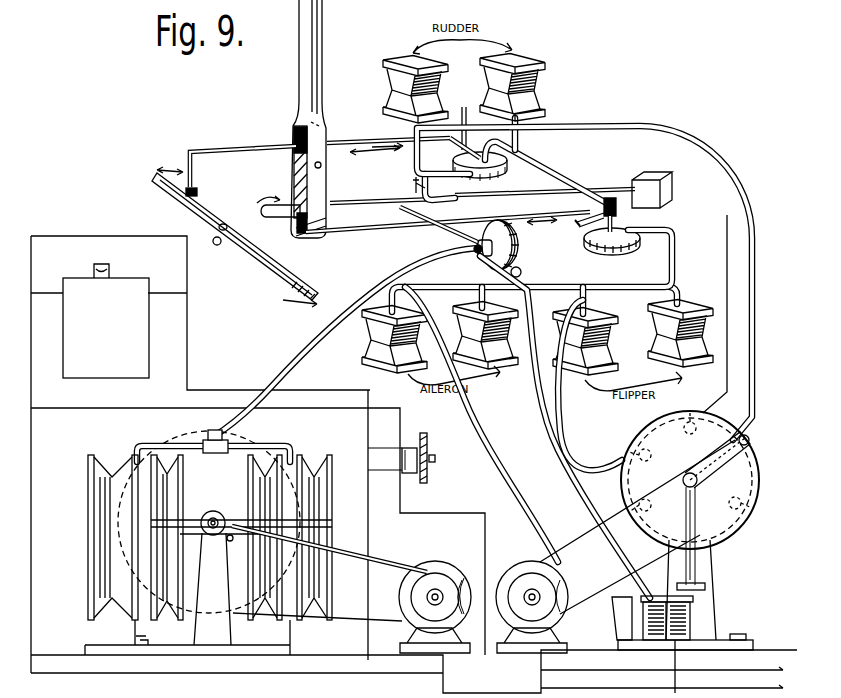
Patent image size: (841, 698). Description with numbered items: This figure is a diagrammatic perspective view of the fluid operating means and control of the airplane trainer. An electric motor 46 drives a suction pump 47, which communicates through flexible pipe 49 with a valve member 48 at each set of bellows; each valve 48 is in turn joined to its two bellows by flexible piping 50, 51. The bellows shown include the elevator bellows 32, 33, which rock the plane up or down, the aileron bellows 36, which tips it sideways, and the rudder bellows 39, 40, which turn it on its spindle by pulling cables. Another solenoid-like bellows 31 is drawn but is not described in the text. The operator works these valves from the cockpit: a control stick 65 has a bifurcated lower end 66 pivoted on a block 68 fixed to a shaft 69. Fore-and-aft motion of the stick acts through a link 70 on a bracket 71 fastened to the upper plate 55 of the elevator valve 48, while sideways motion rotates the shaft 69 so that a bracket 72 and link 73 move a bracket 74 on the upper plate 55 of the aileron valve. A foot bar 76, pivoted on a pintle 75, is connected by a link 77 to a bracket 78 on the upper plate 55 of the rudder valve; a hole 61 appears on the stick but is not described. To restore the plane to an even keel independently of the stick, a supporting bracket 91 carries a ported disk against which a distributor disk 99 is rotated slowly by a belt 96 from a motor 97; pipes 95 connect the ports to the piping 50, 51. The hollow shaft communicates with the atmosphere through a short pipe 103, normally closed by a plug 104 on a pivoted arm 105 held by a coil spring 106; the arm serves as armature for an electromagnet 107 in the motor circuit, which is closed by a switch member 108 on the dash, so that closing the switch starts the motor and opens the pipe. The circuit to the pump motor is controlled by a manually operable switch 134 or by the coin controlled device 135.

The aileron solenoid 31 is at (509, 352).
The elevator bellows 32 is at (580, 358).
The elevator bellows 33 is at (742, 332).
The aileron bellows 36 is at (362, 343).
The rudder bellows 39 is at (396, 98).
The rudder bellows 40 is at (540, 82).
The electric motor 46 is at (439, 578).
The suction pump 47 is at (188, 602).
The valve member 48 is at (505, 173).
The flexible pipe 49 is at (552, 173).
The flexible piping 50 is at (416, 127).
The flexible piping 51 is at (520, 127).
The upper plate 55 is at (457, 156).
The pivot hole 61 is at (321, 160).
The control stick 65 is at (321, 22).
The bifurcated lower end 66 is at (326, 192).
The block 68 is at (294, 172).
The shaft 69 is at (356, 204).
The link 70 is at (387, 233).
The bracket 71 is at (582, 226).
The bracket 72 is at (458, 193).
The link 73 is at (414, 185).
The bracket 74 is at (458, 233).
The pintle 75 is at (216, 246).
The foot bar 76 is at (208, 214).
The link 77 is at (243, 147).
The bracket 78 is at (462, 119).
The supporting bracket 91 is at (705, 626).
The pipes 95 is at (742, 374).
The belt 96 is at (570, 522).
The motor 97 is at (568, 592).
The distributor disk 99 is at (740, 492).
The short pipe 103 is at (716, 580).
The valve or plug 104 is at (707, 590).
The pivoted arm 105 is at (700, 600).
The coil spring 106 is at (614, 624).
The electromagnet 107 is at (718, 650).
The switch member 108 is at (436, 462).
The manually operable switch 134 is at (88, 233).
The coin device 135 is at (122, 280).